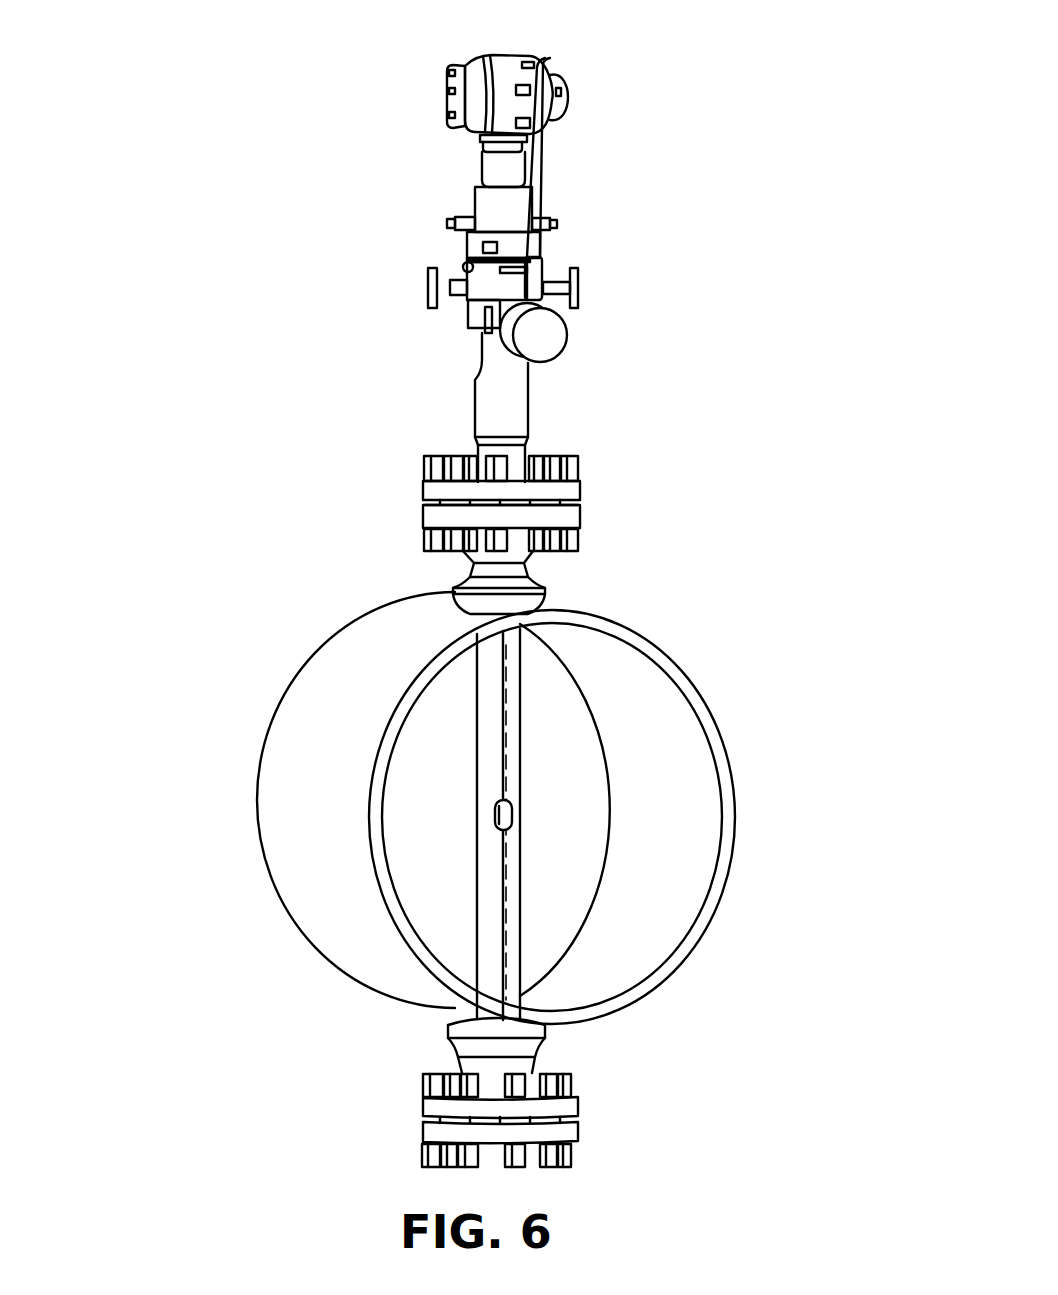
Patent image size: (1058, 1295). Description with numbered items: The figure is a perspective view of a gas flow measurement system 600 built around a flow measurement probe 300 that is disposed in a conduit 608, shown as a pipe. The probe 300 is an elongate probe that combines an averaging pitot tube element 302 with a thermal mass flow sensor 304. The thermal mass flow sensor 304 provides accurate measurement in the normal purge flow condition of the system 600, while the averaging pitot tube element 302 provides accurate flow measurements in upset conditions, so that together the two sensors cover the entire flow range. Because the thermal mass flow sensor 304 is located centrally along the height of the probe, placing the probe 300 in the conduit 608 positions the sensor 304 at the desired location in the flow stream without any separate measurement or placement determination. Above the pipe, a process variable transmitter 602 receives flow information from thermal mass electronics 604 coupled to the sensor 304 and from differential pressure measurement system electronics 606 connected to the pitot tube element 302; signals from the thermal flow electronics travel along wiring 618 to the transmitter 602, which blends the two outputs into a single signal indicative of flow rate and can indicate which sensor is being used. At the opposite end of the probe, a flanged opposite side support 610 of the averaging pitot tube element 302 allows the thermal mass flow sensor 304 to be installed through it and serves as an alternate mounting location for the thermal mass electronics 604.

The gas flow measurement system 600 is at (190, 490).
The process variable transmitter 602 is at (550, 56).
The thermal mass electronics housing 604 is at (567, 332).
The differential pressure measurement system electronics 606 is at (427, 289).
The conduit 608 is at (358, 620).
The flanged opposite side support 610 is at (447, 1032).
The wiring 618 is at (543, 172).
The flow measurement probe 300 is at (540, 668).
The averaging pitot tube element 302 is at (520, 707).
The thermal mass flow sensor 304 is at (512, 815).